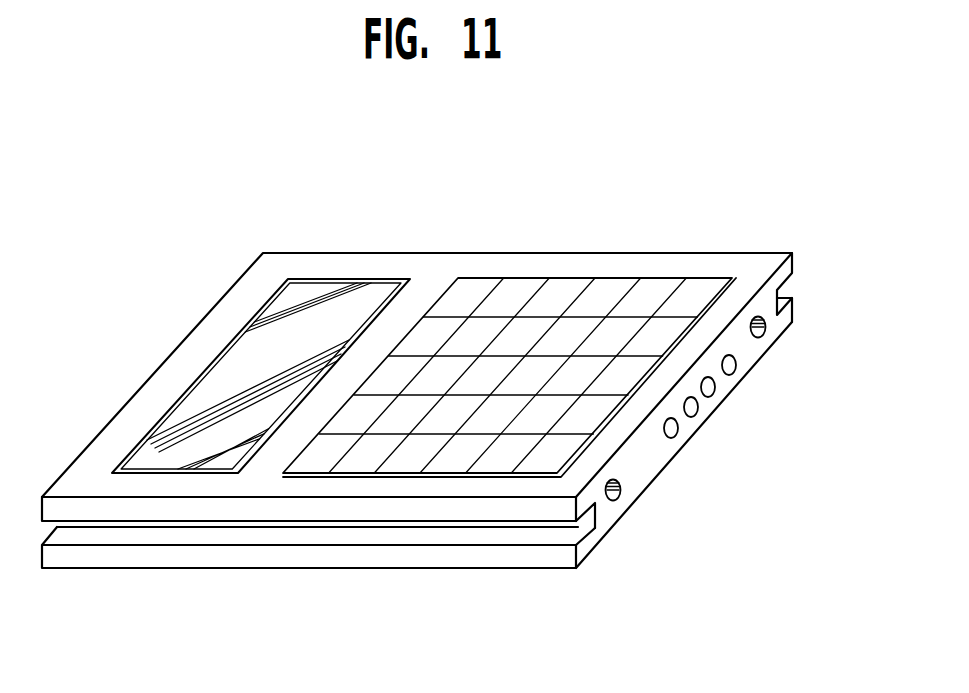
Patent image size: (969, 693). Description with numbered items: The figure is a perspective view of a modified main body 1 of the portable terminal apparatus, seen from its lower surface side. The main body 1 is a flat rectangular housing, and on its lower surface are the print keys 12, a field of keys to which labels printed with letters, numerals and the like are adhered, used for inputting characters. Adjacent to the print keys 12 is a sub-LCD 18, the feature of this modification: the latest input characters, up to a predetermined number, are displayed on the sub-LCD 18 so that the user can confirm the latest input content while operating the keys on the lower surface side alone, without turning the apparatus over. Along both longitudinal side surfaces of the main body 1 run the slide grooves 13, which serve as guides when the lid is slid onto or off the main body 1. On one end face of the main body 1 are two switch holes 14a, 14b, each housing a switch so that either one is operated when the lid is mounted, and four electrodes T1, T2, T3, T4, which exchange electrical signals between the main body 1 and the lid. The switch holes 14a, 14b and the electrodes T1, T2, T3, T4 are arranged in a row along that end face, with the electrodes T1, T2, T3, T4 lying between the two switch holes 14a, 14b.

The main body 1 is at (311, 318).
The print keys 12 is at (604, 298).
The slide grooves 13 is at (353, 540).
The switch hole 14a is at (814, 331).
The switch hole 14b is at (661, 528).
The sub-LCD 18 is at (261, 324).
The electrode T1 is at (793, 371).
The electrode T2 is at (766, 407).
The electrode T3 is at (736, 443).
The electrode T4 is at (704, 480).